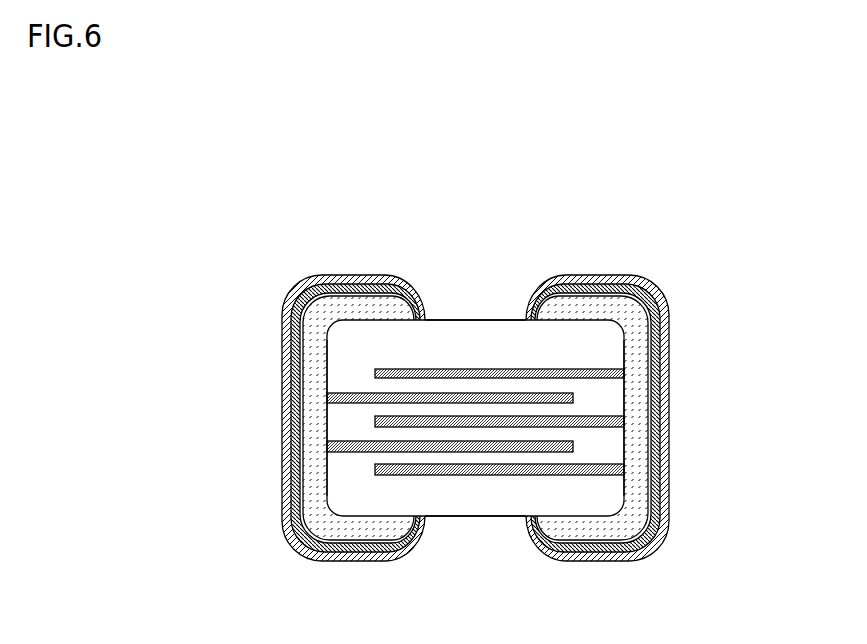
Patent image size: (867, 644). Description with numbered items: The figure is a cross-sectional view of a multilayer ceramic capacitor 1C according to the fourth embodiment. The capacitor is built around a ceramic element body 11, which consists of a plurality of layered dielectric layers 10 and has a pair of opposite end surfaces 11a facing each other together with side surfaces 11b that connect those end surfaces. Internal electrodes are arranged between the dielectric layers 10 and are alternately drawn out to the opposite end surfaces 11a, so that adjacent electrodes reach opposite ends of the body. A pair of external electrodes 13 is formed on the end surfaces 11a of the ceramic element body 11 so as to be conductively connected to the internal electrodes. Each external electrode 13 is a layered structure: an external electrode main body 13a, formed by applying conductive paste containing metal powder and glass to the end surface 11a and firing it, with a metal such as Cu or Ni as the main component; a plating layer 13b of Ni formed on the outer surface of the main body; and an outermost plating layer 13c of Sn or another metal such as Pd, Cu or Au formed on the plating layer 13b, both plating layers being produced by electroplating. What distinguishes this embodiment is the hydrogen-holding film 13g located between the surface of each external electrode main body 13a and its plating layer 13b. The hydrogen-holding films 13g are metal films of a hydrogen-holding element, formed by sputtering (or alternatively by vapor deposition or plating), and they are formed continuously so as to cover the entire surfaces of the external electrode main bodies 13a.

The multilayer ceramic capacitor 1C is at (218, 155).
The dielectric layers 10 is at (408, 412).
The ceramic element body 11 is at (488, 312).
The end surfaces 11a is at (327, 463).
The side surfaces 11b is at (512, 319).
The external electrodes 13 is at (485, 399).
The external electrode main bodies 13a is at (285, 330).
The plating layers 13b is at (292, 300).
The outermost plating layers 13c is at (302, 277).
The hydrogen-holding films 13g is at (481, 418).